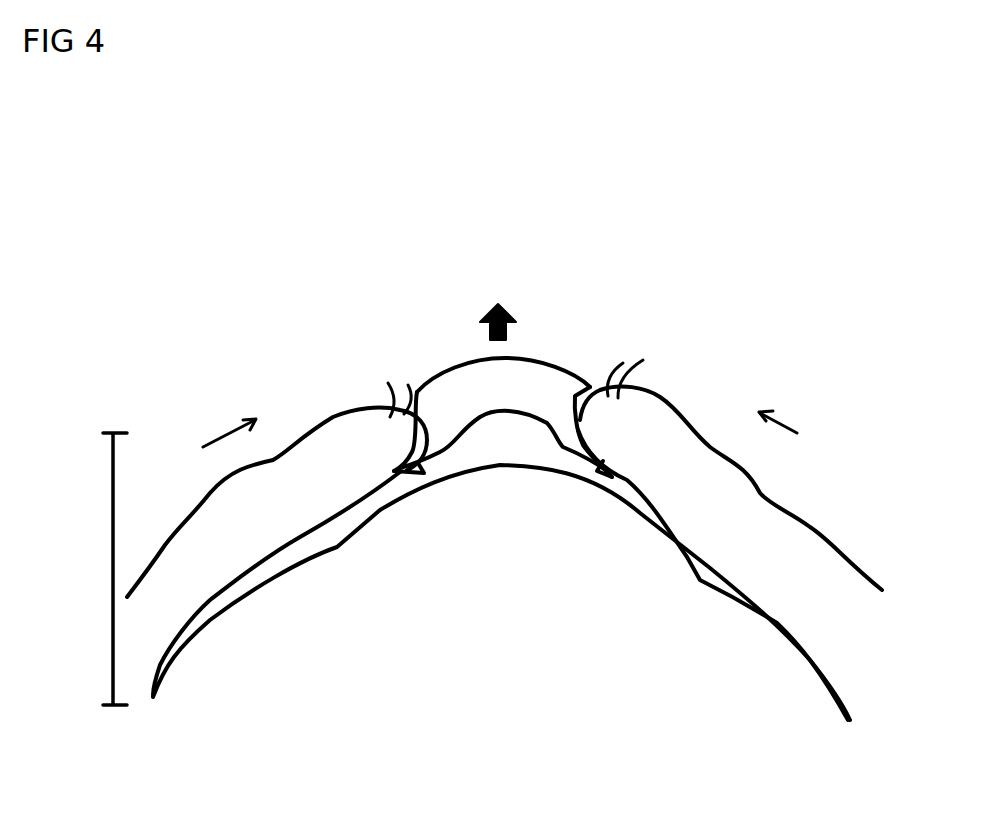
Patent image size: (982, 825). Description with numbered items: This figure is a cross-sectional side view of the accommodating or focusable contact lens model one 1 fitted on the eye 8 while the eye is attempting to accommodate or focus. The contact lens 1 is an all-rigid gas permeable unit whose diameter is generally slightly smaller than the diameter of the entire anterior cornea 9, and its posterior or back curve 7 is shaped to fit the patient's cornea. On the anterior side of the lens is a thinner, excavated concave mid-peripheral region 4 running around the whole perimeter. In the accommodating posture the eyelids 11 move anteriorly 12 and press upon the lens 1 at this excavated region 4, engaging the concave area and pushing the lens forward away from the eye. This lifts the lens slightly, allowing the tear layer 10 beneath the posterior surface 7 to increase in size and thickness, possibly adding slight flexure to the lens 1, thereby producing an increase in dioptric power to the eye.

The accommodating or focusable contact lens model one 1 is at (552, 284).
The excavated concave mid-peripheral region 4 is at (432, 412).
The posterior or back curve of the contact lens 7 is at (485, 404).
The eye 8 is at (106, 569).
The anterior cornea 9 is at (501, 592).
The tear layer 10 is at (505, 442).
The eyelids 11 is at (504, 553).
The anterior movement of the eyelids 12 is at (510, 416).